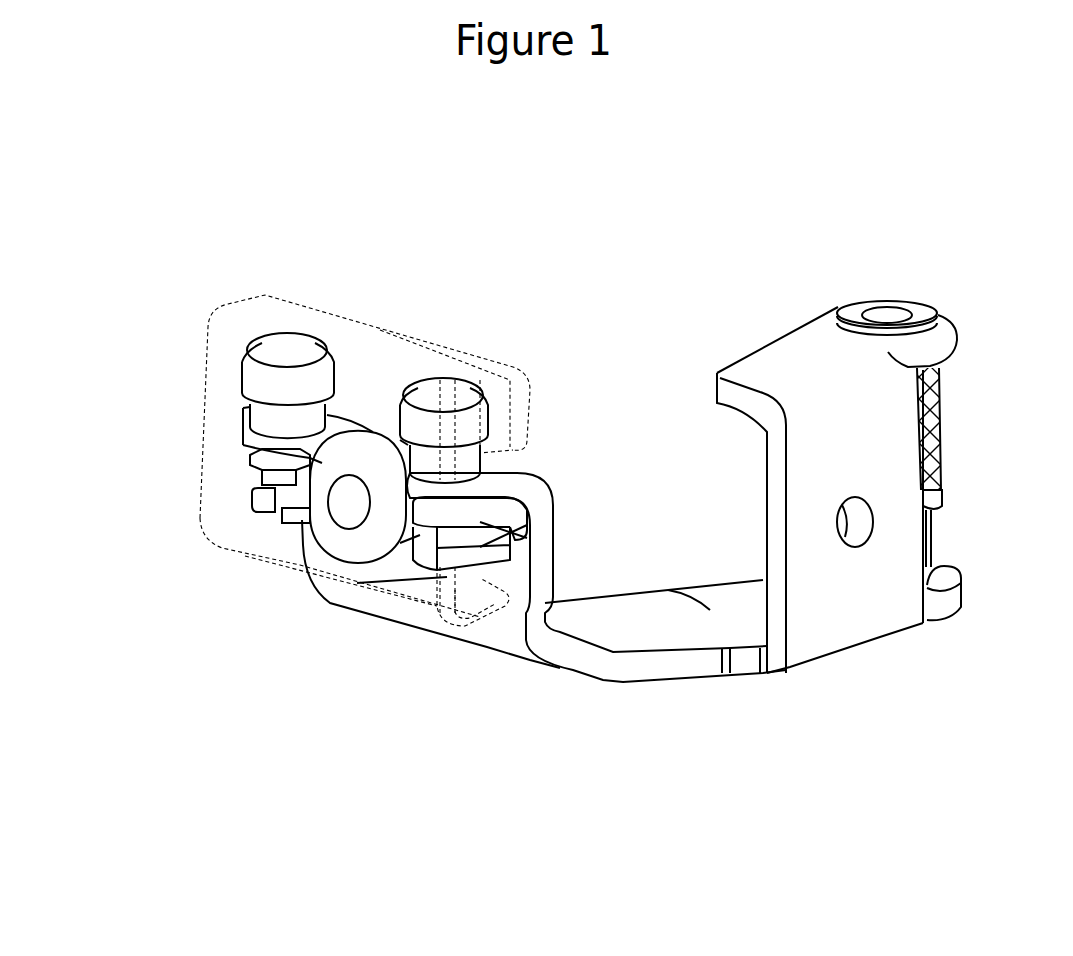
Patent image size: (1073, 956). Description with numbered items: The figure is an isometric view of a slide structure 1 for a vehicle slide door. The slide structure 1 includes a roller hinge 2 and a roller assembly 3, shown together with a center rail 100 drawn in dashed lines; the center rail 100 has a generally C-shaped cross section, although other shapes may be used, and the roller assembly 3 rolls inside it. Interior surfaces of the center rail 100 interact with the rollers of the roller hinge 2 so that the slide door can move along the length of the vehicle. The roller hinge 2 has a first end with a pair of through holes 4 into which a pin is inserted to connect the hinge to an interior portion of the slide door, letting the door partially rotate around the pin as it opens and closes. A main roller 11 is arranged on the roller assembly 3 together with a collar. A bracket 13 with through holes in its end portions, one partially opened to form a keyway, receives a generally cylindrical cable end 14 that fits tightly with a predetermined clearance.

The slide structure 1 is at (550, 549).
The roller hinge 2 is at (877, 437).
The roller assembly 3 is at (286, 573).
The through holes 4 is at (915, 300).
The main roller 11 is at (347, 537).
The bracket 13 is at (523, 497).
The cable end 14 is at (462, 563).
The center rail 100 is at (227, 310).